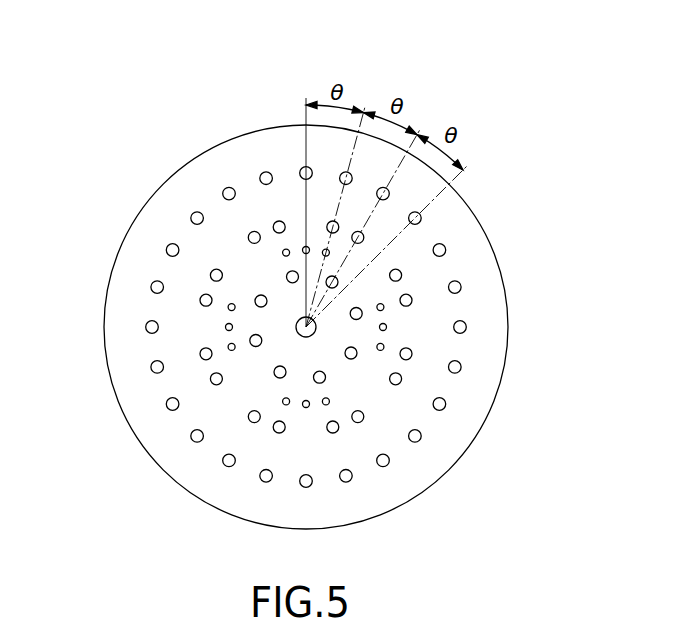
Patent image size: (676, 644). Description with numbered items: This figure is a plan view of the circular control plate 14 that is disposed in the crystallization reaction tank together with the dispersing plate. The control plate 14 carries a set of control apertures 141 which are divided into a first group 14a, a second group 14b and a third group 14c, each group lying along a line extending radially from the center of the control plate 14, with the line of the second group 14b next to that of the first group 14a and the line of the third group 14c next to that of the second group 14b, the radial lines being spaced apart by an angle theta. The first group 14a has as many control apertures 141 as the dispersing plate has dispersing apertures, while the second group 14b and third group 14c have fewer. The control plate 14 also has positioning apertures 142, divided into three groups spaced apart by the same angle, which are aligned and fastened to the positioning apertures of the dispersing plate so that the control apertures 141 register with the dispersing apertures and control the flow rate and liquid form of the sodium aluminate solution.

The control plate 14 is at (132, 208).
The control apertures 141 is at (420, 135).
The first group of control apertures 14a is at (389, 192).
The second group of control apertures 14b is at (341, 179).
The third group of control apertures 14c is at (302, 167).
The positioning apertures 142 is at (282, 252).